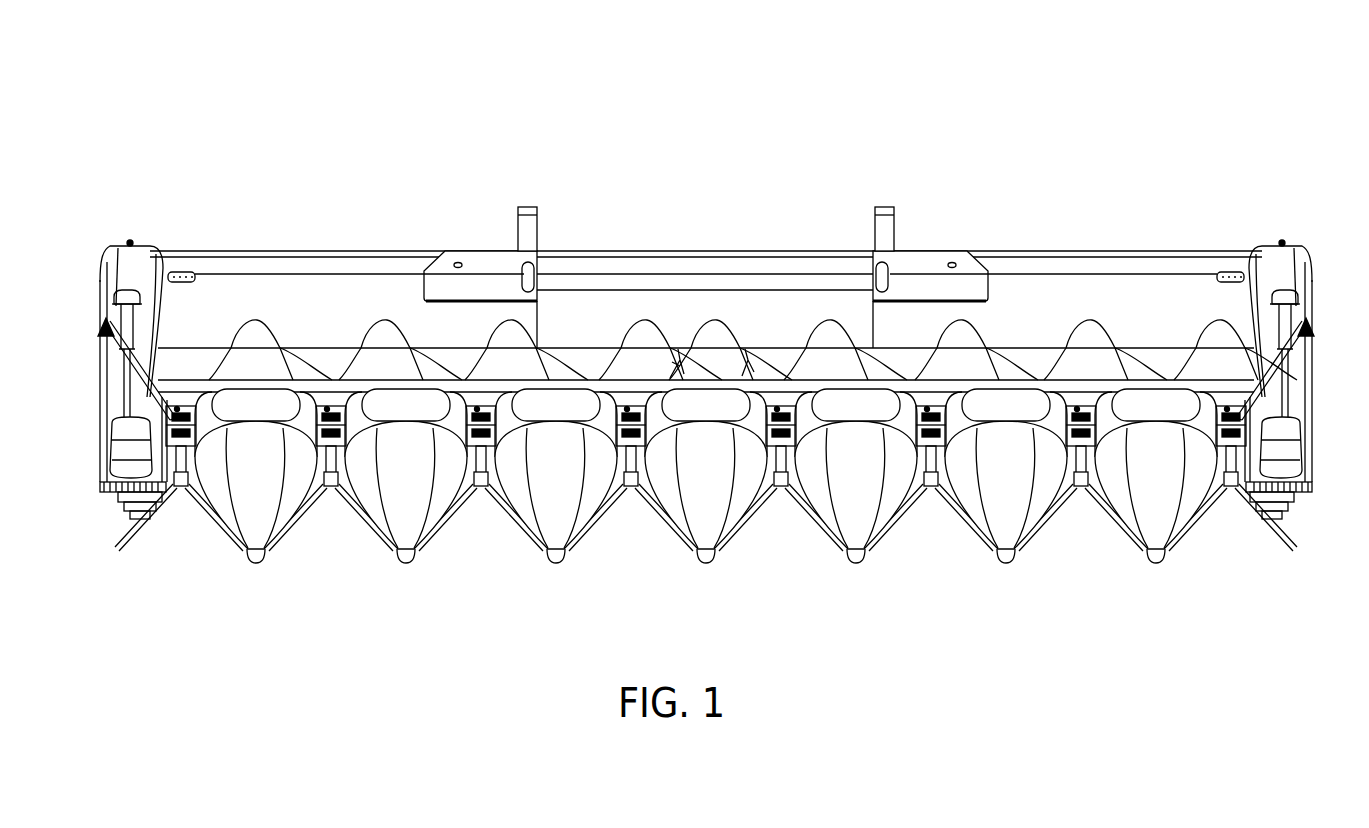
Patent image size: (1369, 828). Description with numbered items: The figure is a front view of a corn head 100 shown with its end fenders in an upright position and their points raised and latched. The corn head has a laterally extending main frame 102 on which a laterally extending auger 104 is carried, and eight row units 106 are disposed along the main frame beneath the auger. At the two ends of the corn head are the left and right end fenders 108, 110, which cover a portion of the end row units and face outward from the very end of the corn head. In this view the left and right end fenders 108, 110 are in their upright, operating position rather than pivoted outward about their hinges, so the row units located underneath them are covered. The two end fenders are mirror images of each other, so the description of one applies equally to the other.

The corn header 100 is at (741, 163).
The main frame 102 is at (596, 257).
The auger 104 is at (422, 360).
The row units 106 is at (320, 400).
The left end fender 108 is at (1284, 264).
The right end fender 110 is at (127, 267).